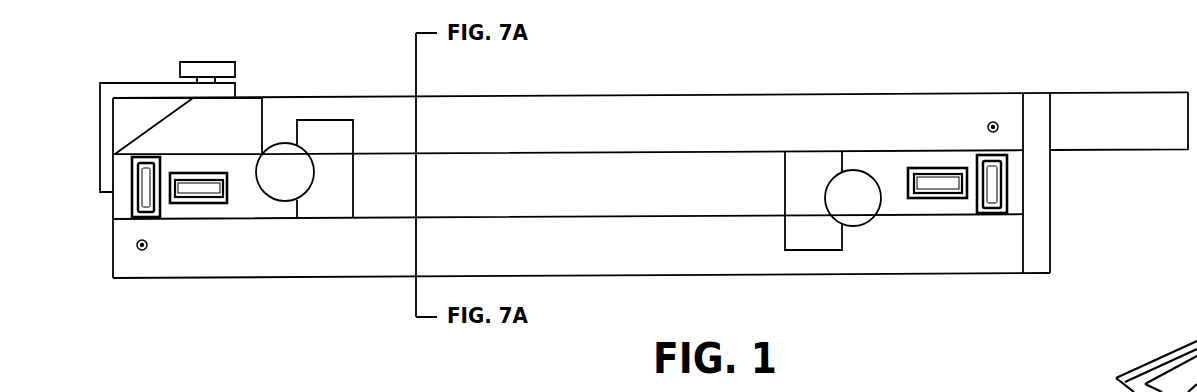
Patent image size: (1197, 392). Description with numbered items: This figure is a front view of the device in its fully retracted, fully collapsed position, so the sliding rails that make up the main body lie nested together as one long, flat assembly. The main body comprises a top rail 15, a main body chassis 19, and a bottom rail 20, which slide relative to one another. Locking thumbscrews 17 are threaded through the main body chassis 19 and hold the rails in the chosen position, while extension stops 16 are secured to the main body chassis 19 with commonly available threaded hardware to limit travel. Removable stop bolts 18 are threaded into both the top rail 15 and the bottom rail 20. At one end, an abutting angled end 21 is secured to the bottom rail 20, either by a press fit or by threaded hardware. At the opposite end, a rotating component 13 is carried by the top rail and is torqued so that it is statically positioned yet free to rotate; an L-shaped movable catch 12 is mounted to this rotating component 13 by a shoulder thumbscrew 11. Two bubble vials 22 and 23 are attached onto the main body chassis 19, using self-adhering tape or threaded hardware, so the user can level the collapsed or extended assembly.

The shoulder thumbscrew 11 is at (213, 68).
The L-shaped movable catch 12 is at (105, 112).
The rotating component 13 is at (248, 105).
The top rail 15 is at (355, 113).
The extension stops 16 is at (312, 133).
The locking thumbscrews 17 is at (282, 147).
The removable stop bolts 18 is at (137, 249).
The main body chassis 19 is at (647, 187).
The bottom rail 20 is at (537, 263).
The abutting angled end 21 is at (1142, 102).
The bubble vial 22 is at (203, 190).
The bubble vial 23 is at (132, 203).